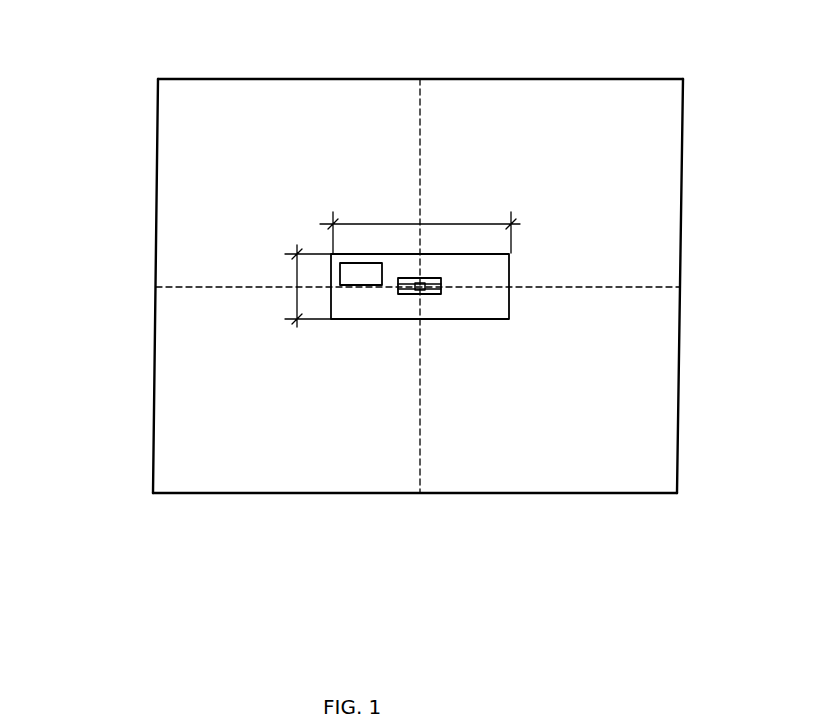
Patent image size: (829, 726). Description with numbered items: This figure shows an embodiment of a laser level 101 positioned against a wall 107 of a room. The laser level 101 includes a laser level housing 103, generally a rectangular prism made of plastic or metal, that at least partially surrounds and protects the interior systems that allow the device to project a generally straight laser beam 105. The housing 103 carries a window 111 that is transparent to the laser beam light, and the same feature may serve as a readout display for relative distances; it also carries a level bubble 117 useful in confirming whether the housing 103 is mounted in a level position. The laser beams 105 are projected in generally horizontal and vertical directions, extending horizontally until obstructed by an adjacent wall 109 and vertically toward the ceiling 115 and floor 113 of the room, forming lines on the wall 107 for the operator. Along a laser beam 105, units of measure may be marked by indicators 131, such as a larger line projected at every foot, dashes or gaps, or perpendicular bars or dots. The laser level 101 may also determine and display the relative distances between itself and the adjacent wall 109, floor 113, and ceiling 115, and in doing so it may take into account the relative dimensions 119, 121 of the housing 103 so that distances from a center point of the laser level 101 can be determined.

The laser level 101 is at (387, 284).
The laser level housing 103 is at (460, 261).
The laser beam 105 is at (638, 278).
The wall 107 is at (387, 284).
The adjacent wall 109 is at (142, 443).
The window 111 is at (365, 276).
The floor 113 is at (278, 505).
The ceiling 115 is at (347, 70).
The level bubble 117 is at (441, 272).
The relative dimension 119 is at (402, 213).
The relative dimension 121 is at (293, 277).
The indicator 131 is at (434, 127).